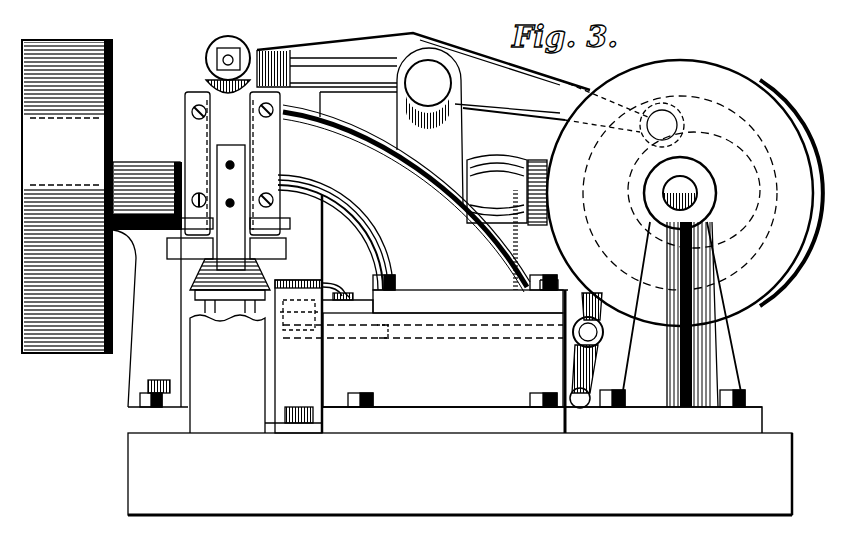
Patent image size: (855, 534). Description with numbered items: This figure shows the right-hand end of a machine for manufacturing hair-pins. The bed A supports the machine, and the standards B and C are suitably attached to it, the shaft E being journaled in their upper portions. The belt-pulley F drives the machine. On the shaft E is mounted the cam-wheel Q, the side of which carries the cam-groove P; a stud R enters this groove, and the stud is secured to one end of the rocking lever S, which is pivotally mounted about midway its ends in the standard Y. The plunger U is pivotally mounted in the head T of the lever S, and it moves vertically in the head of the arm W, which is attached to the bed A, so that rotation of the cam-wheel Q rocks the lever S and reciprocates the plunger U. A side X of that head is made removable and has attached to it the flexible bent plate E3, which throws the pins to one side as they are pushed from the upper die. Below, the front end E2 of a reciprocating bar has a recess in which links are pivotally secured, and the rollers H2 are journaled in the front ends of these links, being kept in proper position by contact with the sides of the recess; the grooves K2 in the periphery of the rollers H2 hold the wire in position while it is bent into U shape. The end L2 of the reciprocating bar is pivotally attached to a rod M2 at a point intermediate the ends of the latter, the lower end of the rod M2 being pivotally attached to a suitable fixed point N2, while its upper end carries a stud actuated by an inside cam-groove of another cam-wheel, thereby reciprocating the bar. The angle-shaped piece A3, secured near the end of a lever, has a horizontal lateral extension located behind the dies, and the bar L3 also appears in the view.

The bed A is at (460, 461).
The standard B is at (330, 281).
The standard C is at (672, 314).
The shaft E is at (414, 193).
The belt-pulley F is at (67, 196).
The cam-groove P is at (750, 118).
The cam-wheel Q is at (688, 60).
The stud R is at (662, 112).
The rocking lever S is at (452, 82).
The head T is at (210, 48).
The plunger U is at (210, 86).
The arm W is at (404, 262).
The side of head X is at (228, 202).
The standard Y is at (430, 126).
The angle-shaped piece A3 is at (346, 290).
The front end of reciprocating bar E2 is at (334, 332).
The flexible bent plate E3 is at (231, 207).
The roller H2 is at (305, 332).
The groove K2 is at (268, 325).
The end of bar L2 is at (570, 340).
The bar L3 is at (462, 325).
The rod M2 is at (597, 340).
The fixed point N2 is at (588, 405).